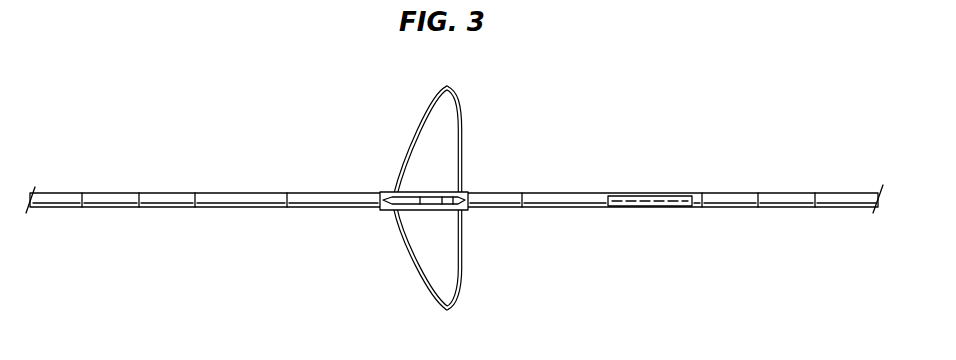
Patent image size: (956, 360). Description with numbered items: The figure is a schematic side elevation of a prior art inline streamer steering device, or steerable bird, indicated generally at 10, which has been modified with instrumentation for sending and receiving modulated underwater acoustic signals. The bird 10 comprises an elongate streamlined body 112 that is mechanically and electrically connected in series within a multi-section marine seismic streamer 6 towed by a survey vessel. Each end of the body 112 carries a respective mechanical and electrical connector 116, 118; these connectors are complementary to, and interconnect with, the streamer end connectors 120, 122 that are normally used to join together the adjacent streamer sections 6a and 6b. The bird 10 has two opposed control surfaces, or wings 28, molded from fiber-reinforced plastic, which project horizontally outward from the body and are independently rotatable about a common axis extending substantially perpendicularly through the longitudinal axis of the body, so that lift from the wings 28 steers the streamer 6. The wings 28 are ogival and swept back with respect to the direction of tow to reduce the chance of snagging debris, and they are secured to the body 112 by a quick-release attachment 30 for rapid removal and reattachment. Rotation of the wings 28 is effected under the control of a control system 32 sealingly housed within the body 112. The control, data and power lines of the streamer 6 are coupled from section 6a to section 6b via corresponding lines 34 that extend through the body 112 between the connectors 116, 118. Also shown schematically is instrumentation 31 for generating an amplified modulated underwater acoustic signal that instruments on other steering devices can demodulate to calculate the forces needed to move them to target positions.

The streamer control device 10 is at (580, 128).
The multi-section marine seismic streamer 6 is at (58, 208).
The streamer section 6a is at (55, 192).
The streamer section 6b is at (850, 192).
The streamer end connector 120 is at (112, 192).
The mechanical and electrical connector 116 is at (163, 192).
The lines 34 is at (322, 193).
The wings 28 is at (440, 102).
The quick-release attachment 30 is at (424, 206).
The instrumentation 31 is at (456, 206).
The elongate streamlined body 112 is at (542, 192).
The control system 32 is at (645, 195).
The mechanical and electrical connector 118 is at (737, 192).
The streamer end connector 122 is at (783, 192).